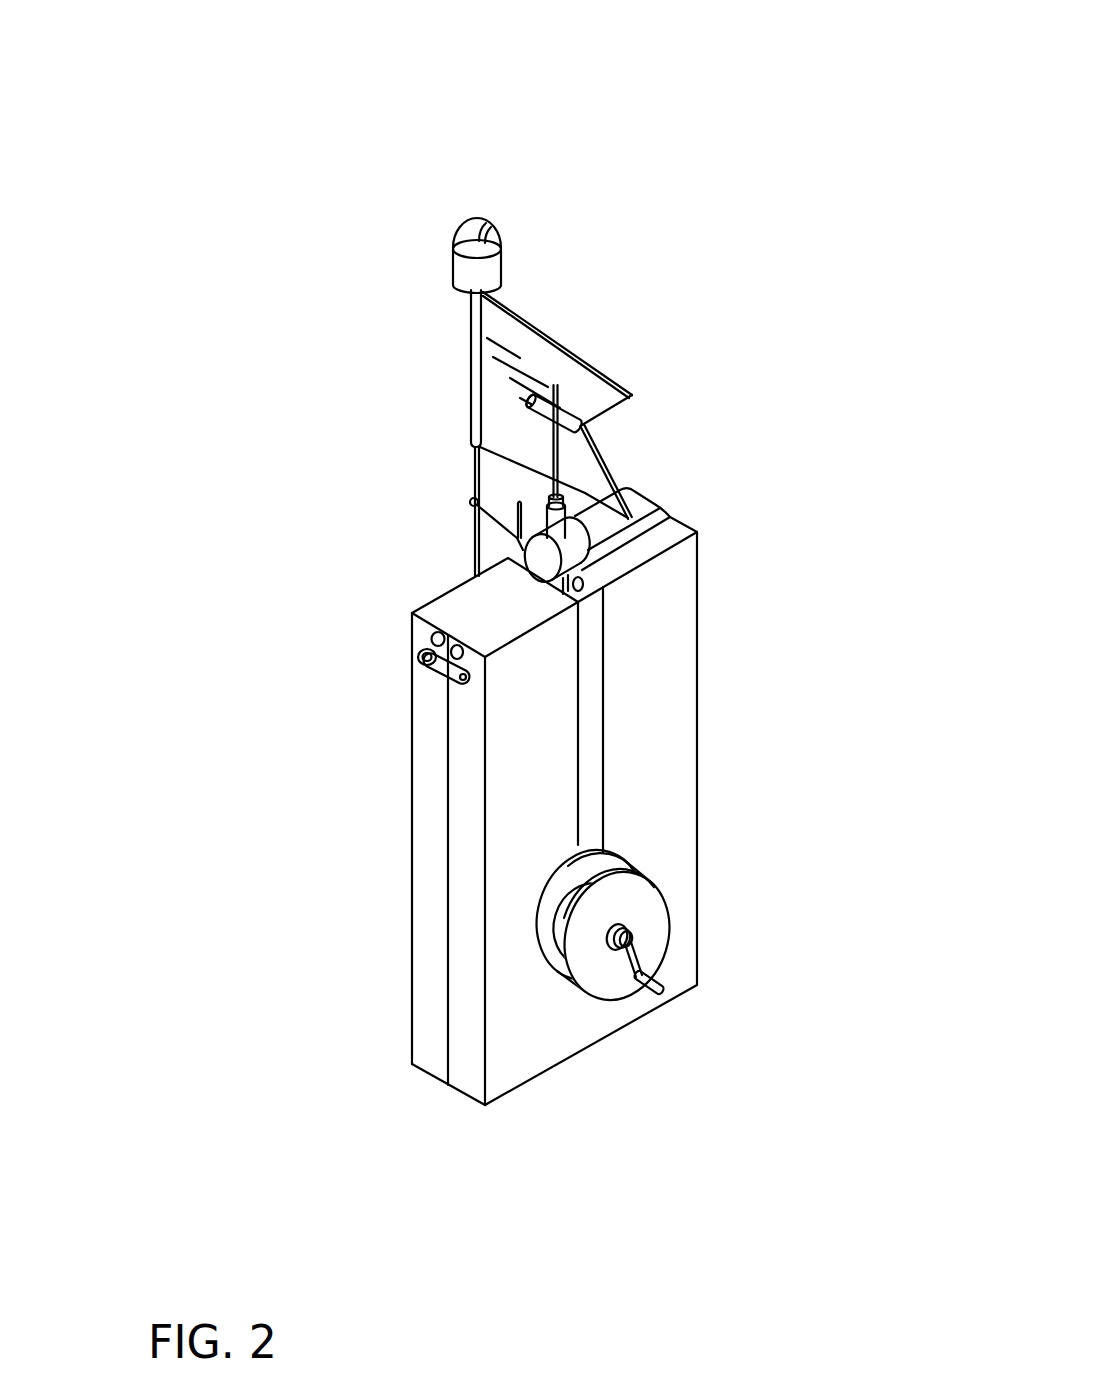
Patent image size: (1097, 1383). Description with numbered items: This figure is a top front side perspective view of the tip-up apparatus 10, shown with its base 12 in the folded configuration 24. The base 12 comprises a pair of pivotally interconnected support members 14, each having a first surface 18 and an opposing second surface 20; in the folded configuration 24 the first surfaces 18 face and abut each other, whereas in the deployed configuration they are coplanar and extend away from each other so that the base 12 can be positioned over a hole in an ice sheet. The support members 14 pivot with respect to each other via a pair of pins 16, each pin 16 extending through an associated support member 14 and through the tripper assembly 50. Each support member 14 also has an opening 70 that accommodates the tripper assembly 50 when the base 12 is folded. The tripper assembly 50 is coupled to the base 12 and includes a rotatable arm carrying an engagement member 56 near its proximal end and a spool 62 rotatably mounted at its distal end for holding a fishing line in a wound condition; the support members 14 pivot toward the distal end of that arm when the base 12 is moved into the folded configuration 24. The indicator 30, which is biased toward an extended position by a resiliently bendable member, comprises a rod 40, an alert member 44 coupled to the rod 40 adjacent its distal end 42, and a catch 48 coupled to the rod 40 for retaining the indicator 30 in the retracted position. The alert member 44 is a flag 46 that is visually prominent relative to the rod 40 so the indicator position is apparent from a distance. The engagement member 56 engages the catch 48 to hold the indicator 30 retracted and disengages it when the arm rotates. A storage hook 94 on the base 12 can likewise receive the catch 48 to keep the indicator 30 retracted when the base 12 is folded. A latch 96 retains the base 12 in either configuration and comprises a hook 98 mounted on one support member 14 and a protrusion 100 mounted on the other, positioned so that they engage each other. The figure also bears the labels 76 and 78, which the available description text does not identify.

The tip-up apparatus 10 is at (642, 92).
The base 12 is at (800, 735).
The support member 14 is at (663, 778).
The pin 16 is at (457, 636).
The first surface 18 is at (448, 990).
The second surface 20 is at (682, 957).
The folded configuration 24 is at (583, 1112).
The indicator 30 is at (415, 172).
The rod 40 is at (477, 468).
The distal end 42 is at (473, 290).
The alert member 44 is at (648, 330).
The flag 46 is at (530, 342).
The catch 48 is at (510, 547).
The tripper assembly 50 is at (702, 878).
The engagement member 56 is at (568, 415).
The spool 62 is at (643, 918).
The opening 70 is at (615, 684).
The float body 76 is at (493, 268).
The float cap 78 is at (477, 220).
The storage hook 94 is at (498, 556).
The latch 96 is at (422, 708).
The hook 98 is at (458, 678).
The protrusion 100 is at (424, 661).